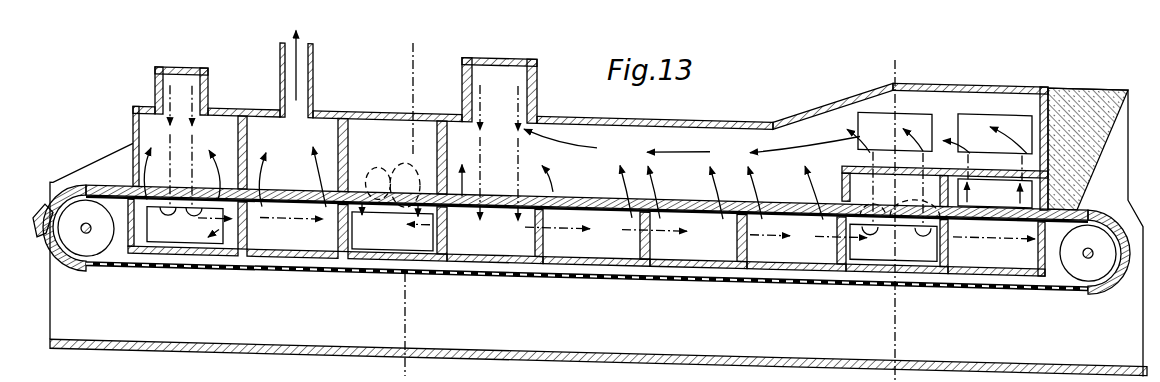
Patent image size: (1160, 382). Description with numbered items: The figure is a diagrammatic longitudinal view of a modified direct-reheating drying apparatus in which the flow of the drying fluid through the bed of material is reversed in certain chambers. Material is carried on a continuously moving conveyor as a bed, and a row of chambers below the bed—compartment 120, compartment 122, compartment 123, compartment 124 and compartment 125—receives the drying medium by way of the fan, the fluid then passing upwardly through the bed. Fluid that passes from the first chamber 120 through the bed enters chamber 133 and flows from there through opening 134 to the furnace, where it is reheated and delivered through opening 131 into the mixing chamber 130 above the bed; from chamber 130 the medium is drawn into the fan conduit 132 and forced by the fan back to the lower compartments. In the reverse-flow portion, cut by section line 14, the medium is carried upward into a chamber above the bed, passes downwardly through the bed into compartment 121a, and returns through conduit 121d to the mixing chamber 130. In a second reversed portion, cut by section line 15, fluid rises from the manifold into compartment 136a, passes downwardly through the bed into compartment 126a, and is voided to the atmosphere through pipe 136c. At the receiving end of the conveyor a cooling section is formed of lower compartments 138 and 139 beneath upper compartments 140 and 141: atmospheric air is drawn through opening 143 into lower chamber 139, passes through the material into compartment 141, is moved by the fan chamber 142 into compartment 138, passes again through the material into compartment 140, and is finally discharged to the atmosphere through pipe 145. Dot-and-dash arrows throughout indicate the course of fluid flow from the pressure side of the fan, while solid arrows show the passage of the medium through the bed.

The chamber 120 is at (995, 265).
The compartment 121a is at (867, 267).
The conduit 121d is at (918, 117).
The compartment 122 is at (785, 259).
The compartment 123 is at (698, 258).
The compartment 124 is at (593, 256).
The compartment 125 is at (493, 251).
The compartment 126a is at (367, 253).
The chamber 130 is at (737, 135).
The opening 131 is at (1000, 118).
The fan conduit 132 is at (522, 80).
The chamber 133 is at (1078, 206).
The opening 134 is at (988, 205).
The compartment 136a is at (423, 132).
The pipe 136c is at (418, 244).
The lower compartment 138 is at (272, 246).
The lower compartment 139 is at (142, 248).
The upper compartment 140 is at (262, 125).
The upper compartment 141 is at (152, 128).
The fan chamber 142 is at (185, 85).
The opening 143 is at (200, 239).
The pipe 145 is at (303, 72).
The section line 14— 14 is at (886, 63).
The section line 15— 15 is at (399, 47).